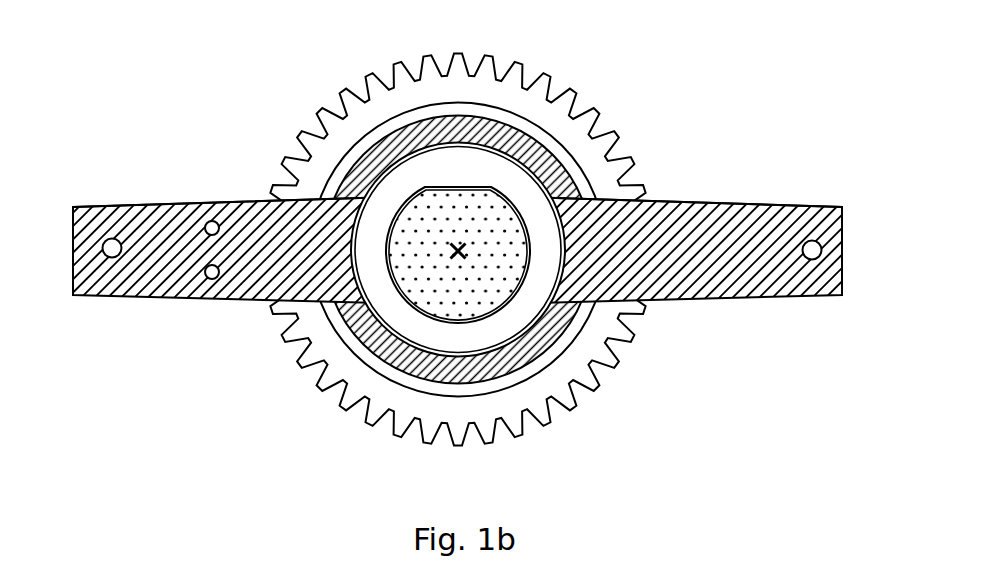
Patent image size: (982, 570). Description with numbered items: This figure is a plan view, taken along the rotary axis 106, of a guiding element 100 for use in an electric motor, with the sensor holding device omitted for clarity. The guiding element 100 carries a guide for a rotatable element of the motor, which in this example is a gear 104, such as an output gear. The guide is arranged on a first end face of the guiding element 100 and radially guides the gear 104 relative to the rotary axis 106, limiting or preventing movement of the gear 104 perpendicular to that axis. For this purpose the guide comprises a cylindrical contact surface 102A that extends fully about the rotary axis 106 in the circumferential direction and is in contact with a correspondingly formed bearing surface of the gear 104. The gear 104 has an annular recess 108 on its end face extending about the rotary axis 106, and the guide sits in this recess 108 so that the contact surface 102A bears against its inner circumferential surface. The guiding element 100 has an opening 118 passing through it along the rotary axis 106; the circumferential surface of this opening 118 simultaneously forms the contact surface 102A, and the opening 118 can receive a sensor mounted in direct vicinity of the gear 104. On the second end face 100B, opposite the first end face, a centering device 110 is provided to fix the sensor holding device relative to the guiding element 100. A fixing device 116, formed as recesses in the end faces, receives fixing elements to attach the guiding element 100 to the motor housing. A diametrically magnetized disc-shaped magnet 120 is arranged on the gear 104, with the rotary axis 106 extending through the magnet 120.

The guiding element 100 is at (754, 180).
The second end face 100B is at (692, 205).
The contact surface 102A is at (389, 168).
The gear 104 is at (336, 68).
The rotary axis 106 is at (457, 243).
The annular recess 108 is at (538, 132).
The centering device 110 is at (212, 221).
The fixing device 116 is at (111, 258).
The opening 118 is at (551, 255).
The disc-shaped magnet 120 is at (481, 294).